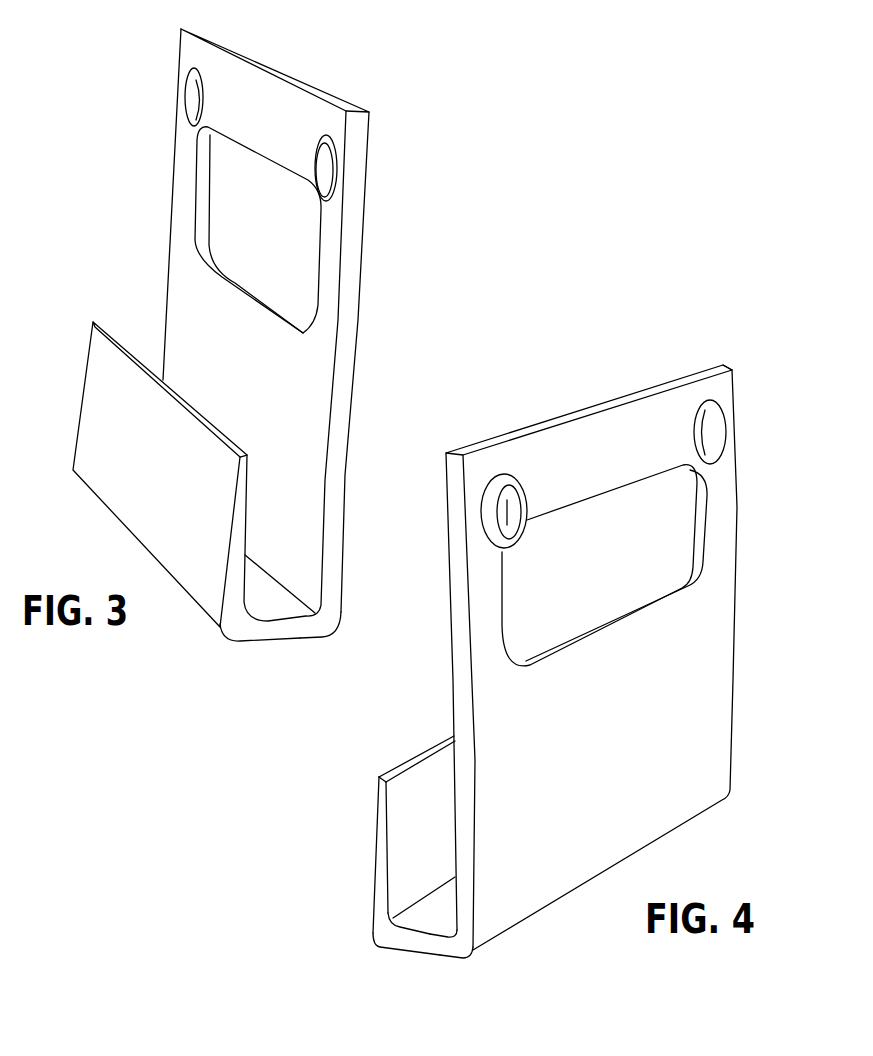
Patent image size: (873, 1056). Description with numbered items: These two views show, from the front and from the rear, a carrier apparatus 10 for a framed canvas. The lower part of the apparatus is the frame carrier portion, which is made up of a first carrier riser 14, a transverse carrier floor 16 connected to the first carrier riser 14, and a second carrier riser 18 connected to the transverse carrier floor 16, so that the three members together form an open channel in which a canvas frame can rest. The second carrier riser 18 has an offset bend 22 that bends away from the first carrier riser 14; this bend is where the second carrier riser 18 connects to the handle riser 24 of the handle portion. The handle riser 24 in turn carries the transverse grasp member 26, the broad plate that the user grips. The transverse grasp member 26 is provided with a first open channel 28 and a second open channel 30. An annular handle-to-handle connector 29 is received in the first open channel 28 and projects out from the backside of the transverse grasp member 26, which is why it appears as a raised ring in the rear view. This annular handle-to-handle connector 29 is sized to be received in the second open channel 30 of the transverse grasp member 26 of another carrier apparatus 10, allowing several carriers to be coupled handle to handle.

In FIG. 3, the carrier apparatus 10 is at (395, 228).
In FIG. 4, the carrier apparatus 10 is at (637, 352).
In FIG. 3, the first carrier riser 14 is at (238, 532).
In FIG. 4, the first carrier riser 14 is at (383, 850).
In FIG. 3, the transverse carrier floor 16 is at (283, 632).
In FIG. 4, the transverse carrier floor 16 is at (418, 943).
In FIG. 3, the second carrier riser 18 is at (335, 527).
In FIG. 4, the second carrier riser 18 is at (460, 827).
In FIG. 3, the offset bend 22 is at (345, 399).
In FIG. 4, the offset bend 22 is at (712, 647).
In FIG. 3, the handle riser 24 is at (348, 303).
In FIG. 4, the handle riser 24 is at (725, 525).
In FIG. 3, the transverse grasp member 26 is at (273, 95).
In FIG. 4, the transverse grasp member 26 is at (608, 437).
In FIG. 4, the first open channel 28 is at (505, 513).
In FIG. 3, the annular handle-to-handle connector 29 is at (332, 142).
In FIG. 4, the annular handle-to-handle connector 29 is at (492, 527).
In FIG. 3, the second open channel 30 is at (192, 108).
In FIG. 4, the second open channel 30 is at (715, 437).